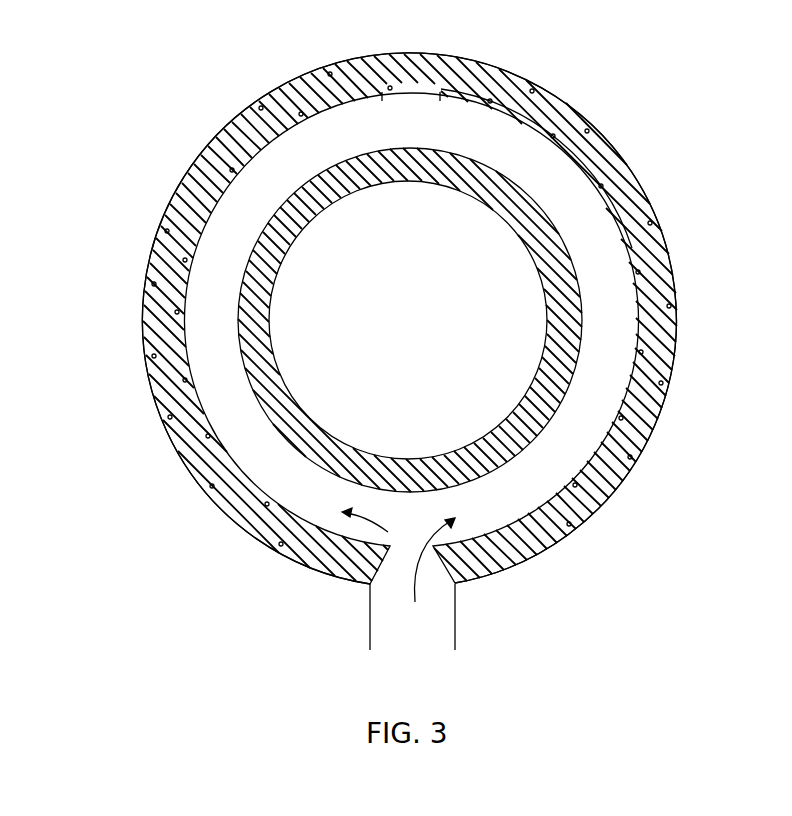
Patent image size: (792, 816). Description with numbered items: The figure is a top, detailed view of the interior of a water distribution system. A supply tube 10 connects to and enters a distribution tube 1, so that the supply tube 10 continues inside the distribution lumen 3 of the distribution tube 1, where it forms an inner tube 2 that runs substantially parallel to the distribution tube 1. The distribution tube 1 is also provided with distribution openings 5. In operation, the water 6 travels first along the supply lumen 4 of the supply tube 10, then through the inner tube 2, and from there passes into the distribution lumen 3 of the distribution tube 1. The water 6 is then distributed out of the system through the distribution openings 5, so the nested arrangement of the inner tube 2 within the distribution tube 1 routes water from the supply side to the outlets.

The distribution tube 1 is at (640, 178).
The inner tube 2 is at (163, 322).
The distribution lumen 3 is at (575, 133).
The supply lumen 4 is at (585, 415).
The distribution openings 5 is at (455, 65).
The water 6 is at (455, 600).
The supply tube 10 is at (370, 617).